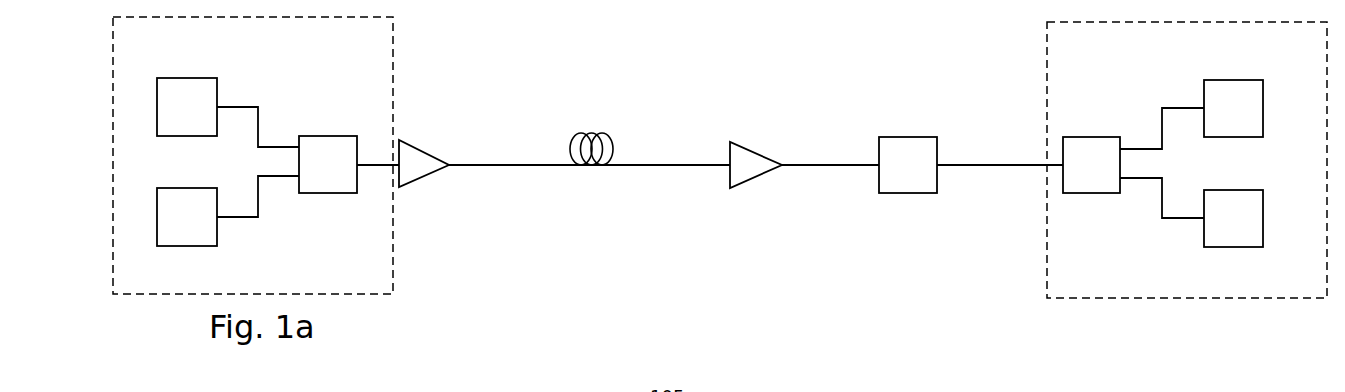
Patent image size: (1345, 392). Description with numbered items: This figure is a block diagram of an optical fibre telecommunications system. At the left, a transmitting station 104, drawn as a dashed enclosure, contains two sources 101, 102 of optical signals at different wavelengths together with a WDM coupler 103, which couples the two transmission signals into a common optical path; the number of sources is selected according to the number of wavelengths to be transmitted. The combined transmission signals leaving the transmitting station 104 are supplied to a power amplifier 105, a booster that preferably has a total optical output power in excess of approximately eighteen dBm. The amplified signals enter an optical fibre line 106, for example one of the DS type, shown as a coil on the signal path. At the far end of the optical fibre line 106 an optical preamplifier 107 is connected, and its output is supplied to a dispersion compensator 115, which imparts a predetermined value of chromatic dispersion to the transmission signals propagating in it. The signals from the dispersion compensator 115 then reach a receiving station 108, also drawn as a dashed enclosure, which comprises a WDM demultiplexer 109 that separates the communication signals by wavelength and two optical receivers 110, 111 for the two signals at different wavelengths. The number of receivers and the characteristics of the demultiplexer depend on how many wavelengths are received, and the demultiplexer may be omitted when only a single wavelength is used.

The source 101 is at (180, 78).
The source 102 is at (183, 246).
The WDM coupler 103 is at (314, 136).
The transmitting station 104 is at (392, 75).
The power amplifier 105 is at (423, 148).
The optical fibre line 106 is at (587, 133).
The optical preamplifier 107 is at (752, 148).
The receiving station 108 is at (1048, 85).
The WDM demultiplexer 109 is at (1070, 137).
The optical receiver 110 is at (1231, 80).
The optical receiver 111 is at (1236, 247).
The dispersion compensator 115 is at (902, 137).